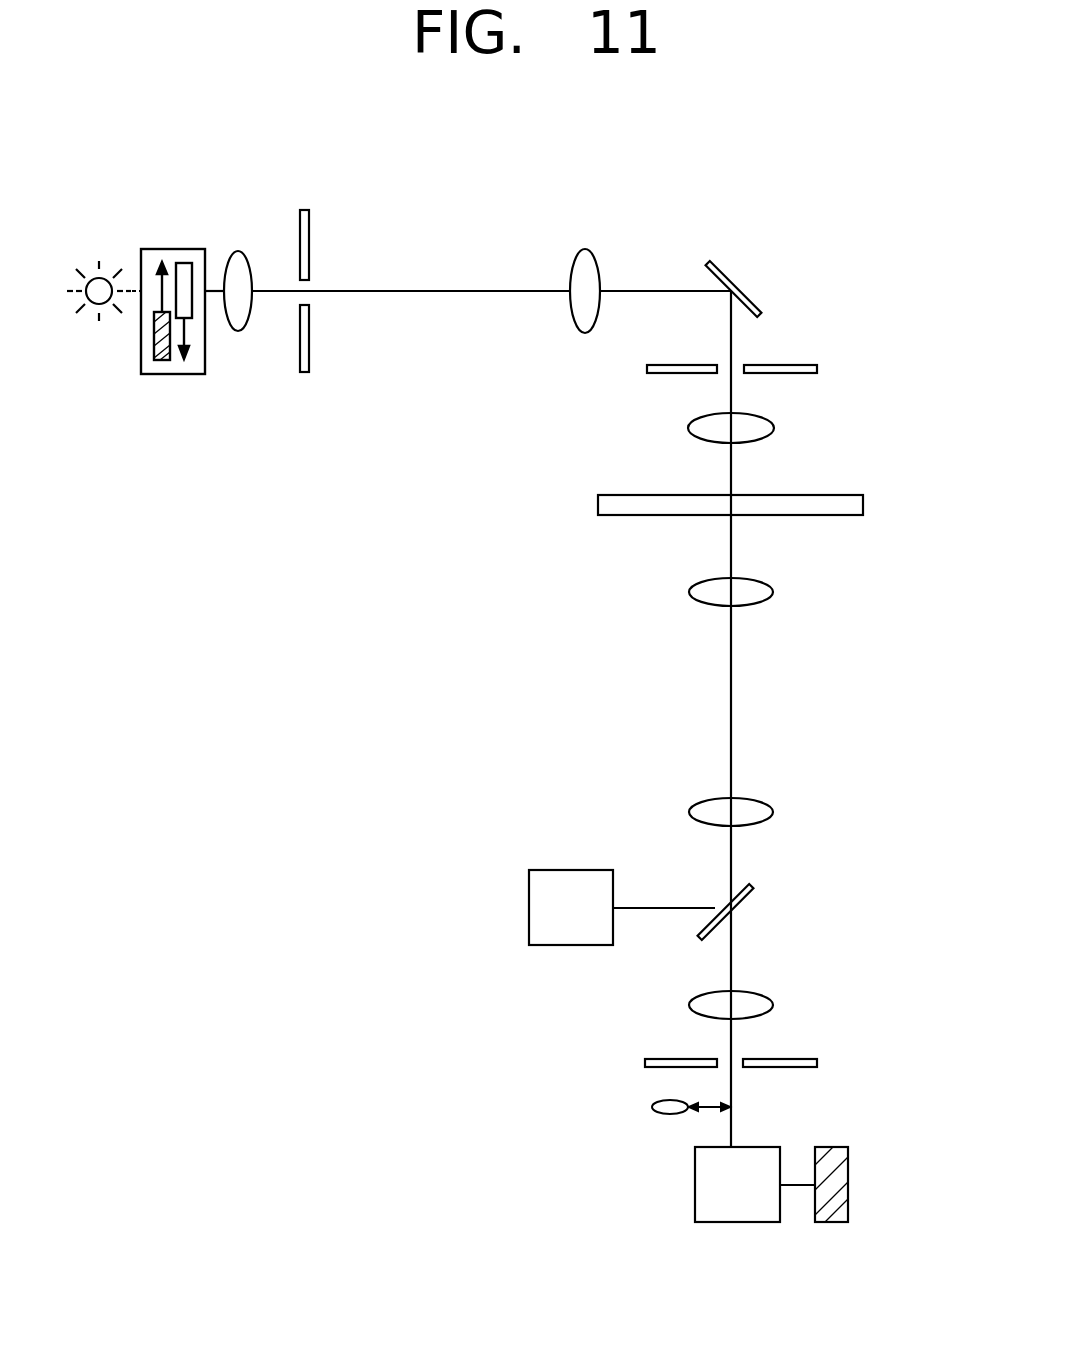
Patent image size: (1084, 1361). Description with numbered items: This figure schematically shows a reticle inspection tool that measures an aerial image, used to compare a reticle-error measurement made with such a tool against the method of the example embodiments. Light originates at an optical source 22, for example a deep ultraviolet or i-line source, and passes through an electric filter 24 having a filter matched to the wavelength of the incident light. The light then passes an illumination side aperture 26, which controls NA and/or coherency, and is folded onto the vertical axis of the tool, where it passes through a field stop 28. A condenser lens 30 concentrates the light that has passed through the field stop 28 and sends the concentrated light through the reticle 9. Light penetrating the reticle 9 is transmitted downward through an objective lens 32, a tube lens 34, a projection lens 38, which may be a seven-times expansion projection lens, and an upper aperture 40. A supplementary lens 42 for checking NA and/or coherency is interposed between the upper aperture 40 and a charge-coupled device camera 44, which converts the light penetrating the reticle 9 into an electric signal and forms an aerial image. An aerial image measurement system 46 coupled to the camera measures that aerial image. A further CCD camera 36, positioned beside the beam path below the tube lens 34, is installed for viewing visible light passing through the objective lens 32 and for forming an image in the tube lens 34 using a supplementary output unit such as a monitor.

The reticle 9 is at (863, 505).
The optical source 22 is at (96, 305).
The electric filter 24 is at (172, 248).
The illumination side aperture 26 is at (305, 374).
The field stop 28 is at (817, 369).
The condenser lens 30 is at (774, 428).
The objective lens 32 is at (773, 592).
The tube lens 34 is at (773, 812).
The CCD camera 36 is at (529, 908).
The projection lens 38 is at (773, 1005).
The upper aperture 40 is at (817, 1063).
The supplementary lens 42 is at (652, 1107).
The CCD camera 44 is at (695, 1185).
The aerial image measurement system 46 is at (848, 1185).